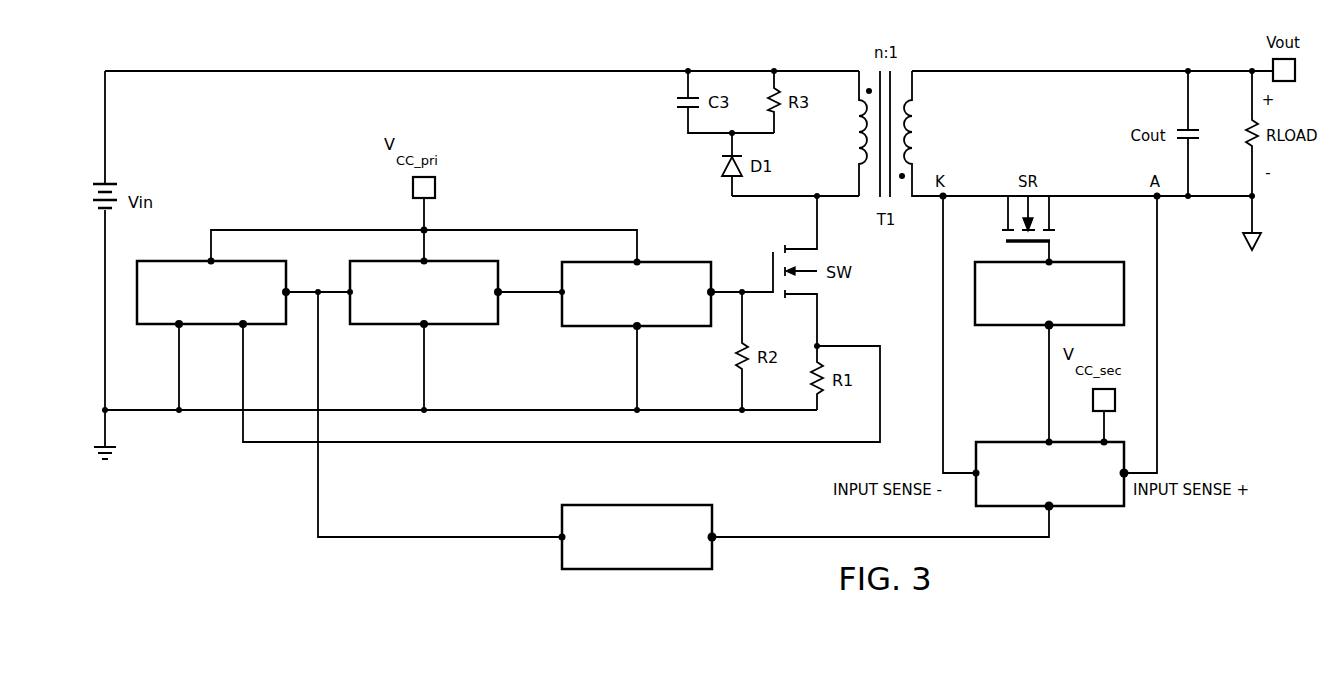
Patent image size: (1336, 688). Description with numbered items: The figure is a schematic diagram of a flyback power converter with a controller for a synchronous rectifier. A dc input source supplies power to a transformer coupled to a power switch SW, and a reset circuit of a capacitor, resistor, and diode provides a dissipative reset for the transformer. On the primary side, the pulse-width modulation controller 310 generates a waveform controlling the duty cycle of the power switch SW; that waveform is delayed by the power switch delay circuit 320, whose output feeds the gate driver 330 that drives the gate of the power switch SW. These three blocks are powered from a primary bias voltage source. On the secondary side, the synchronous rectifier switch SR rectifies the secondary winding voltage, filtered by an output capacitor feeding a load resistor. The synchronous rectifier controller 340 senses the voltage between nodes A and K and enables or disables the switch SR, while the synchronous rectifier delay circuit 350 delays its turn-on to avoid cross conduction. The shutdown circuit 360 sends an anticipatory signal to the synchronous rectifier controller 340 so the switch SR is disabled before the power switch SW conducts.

The pulse-width modulation controller 310 is at (158, 327).
The power switch delay circuit 320 is at (393, 327).
The gate driver 330 is at (606, 328).
The synchronous rectifier controller 340 is at (1070, 509).
The synchronous rectifier delay circuit 350 is at (1092, 259).
The shutdown circuit 360 is at (636, 572).